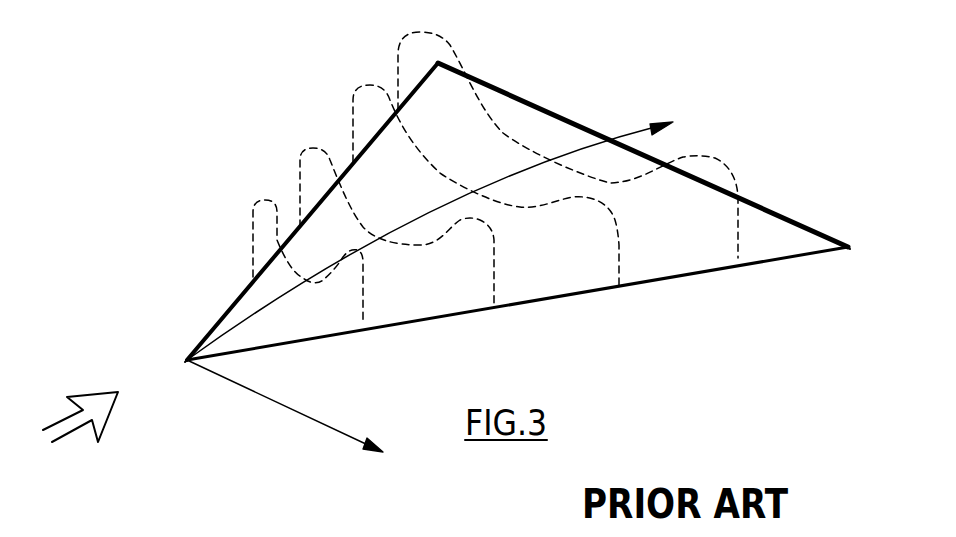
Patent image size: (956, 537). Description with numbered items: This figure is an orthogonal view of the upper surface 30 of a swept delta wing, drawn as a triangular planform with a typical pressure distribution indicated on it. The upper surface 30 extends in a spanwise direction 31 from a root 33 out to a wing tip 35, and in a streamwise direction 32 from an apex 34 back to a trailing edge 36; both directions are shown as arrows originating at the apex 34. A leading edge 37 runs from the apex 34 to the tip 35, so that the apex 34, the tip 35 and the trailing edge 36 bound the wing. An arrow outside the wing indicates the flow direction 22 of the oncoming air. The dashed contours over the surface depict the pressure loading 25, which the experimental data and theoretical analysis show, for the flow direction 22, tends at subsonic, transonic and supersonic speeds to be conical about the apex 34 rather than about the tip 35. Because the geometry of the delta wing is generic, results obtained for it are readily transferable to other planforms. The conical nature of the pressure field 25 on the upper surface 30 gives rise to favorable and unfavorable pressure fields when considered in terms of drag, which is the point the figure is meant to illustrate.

The flow direction 22 is at (65, 440).
The pressure loading 25 is at (325, 152).
The upper surface 30 is at (578, 277).
The spanwise direction 31 is at (308, 417).
The streamwise direction 32 is at (640, 130).
The root 33 is at (450, 204).
The apex 34 is at (187, 362).
The wing tip 35 is at (843, 250).
The trailing edge 36 is at (777, 212).
The leading edge 37 is at (405, 323).